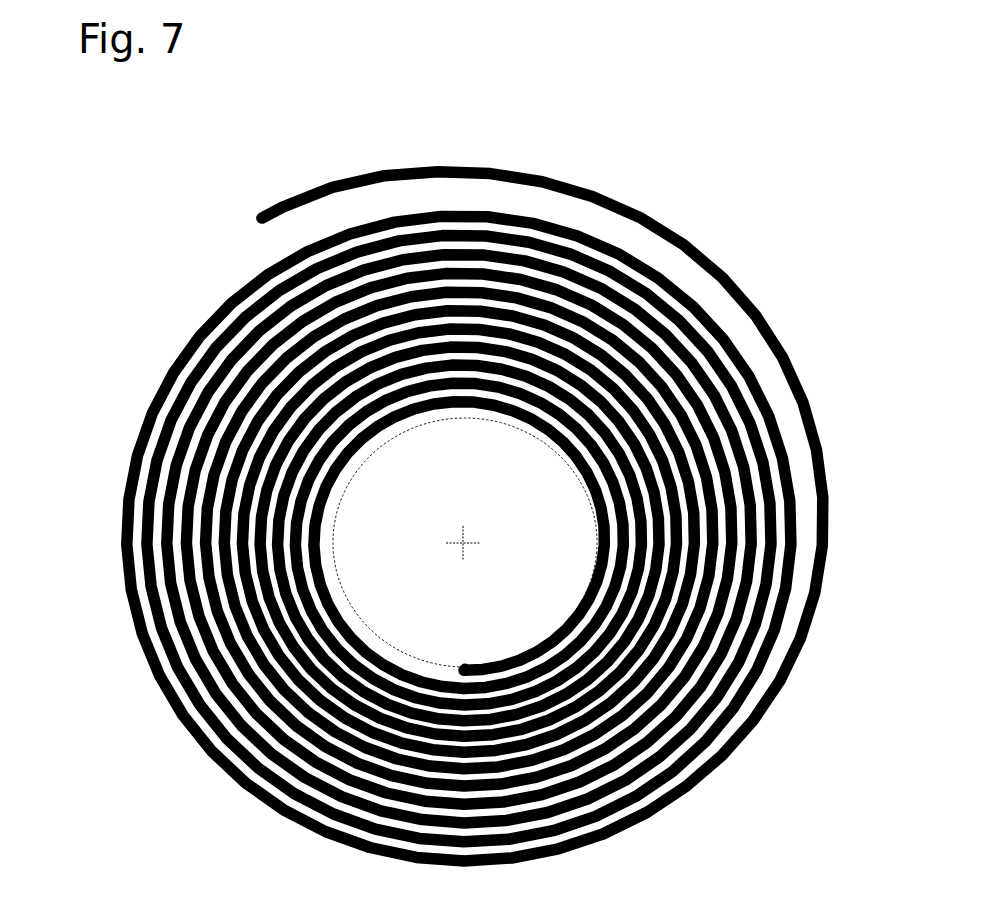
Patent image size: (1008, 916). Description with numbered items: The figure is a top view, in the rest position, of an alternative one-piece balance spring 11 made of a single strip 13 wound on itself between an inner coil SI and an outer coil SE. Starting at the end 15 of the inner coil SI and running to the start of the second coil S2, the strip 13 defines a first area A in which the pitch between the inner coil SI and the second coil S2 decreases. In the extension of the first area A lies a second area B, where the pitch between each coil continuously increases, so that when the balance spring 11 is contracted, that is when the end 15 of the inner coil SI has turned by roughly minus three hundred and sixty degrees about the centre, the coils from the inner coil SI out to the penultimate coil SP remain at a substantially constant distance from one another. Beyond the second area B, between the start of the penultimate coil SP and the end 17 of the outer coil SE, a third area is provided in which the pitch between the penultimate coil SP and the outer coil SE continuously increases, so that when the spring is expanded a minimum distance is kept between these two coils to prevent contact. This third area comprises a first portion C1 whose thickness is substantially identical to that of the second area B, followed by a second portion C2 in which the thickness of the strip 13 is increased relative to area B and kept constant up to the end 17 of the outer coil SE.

The balance spring 11 is at (782, 150).
The strip 13 is at (378, 846).
The end of inner coil 15 is at (450, 664).
The end of outer coil 17 is at (246, 231).
The first portion C1 is at (303, 815).
The second portion C2 is at (512, 171).
The outer coil SE is at (622, 207).
The penultimate coil SP is at (768, 407).
The first area A is at (431, 405).
The second coil S2 is at (606, 468).
The second area B is at (630, 556).
The inner coil SI is at (527, 660).